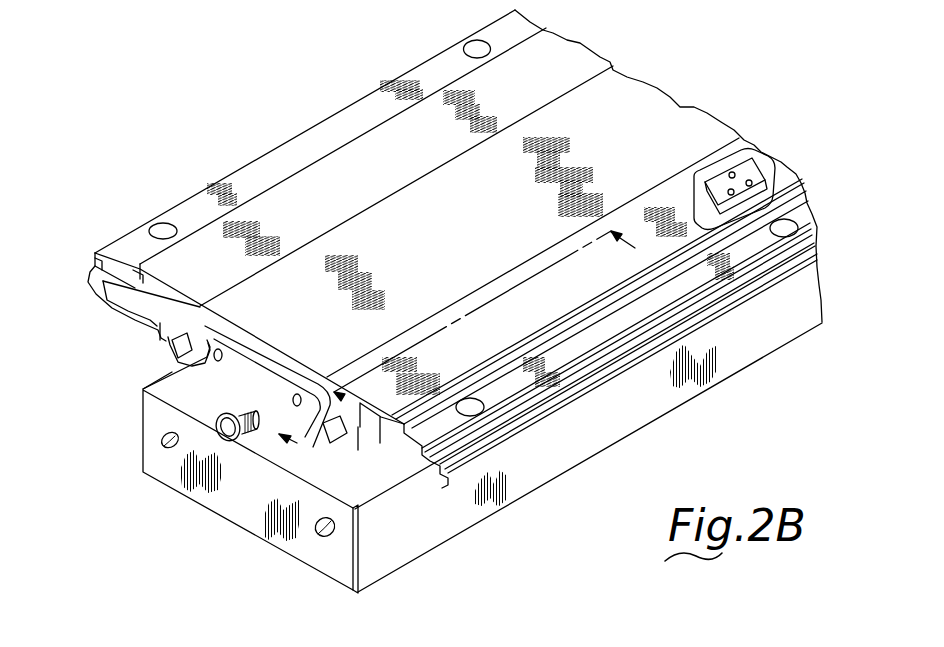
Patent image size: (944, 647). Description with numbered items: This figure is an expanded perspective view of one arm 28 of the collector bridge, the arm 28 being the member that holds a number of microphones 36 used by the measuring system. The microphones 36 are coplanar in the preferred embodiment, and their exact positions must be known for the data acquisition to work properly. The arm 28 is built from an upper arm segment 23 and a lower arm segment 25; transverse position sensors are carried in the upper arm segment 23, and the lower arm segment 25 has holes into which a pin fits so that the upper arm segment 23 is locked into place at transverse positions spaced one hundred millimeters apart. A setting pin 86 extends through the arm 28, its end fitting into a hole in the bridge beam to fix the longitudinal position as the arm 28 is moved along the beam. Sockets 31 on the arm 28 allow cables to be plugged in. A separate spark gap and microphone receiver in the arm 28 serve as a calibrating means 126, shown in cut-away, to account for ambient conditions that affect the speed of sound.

The upper arm segment 23 is at (90, 288).
The lower arm segment 25 is at (141, 425).
The arm 28 is at (795, 163).
The socket 31 is at (165, 447).
The microphone 36 is at (471, 42).
The setting pin 86 is at (226, 414).
The calibrating means 126 is at (751, 163).